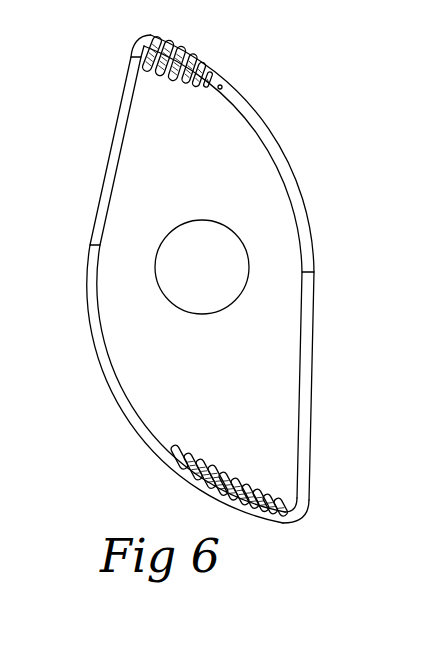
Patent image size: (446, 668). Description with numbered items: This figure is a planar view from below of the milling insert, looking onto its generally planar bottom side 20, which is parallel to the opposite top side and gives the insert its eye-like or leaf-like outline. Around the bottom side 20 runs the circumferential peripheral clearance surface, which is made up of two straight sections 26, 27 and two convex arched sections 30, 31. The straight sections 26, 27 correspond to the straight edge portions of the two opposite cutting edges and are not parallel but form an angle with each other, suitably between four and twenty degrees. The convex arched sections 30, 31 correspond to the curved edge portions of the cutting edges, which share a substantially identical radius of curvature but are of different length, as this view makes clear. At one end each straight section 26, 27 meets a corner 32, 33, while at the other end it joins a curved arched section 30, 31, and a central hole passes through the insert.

The bottom side 20 is at (207, 181).
The straight section of the clearance surface 26 is at (306, 376).
The straight section of the clearance surface 27 is at (115, 140).
The convex arched section of the clearance surface 30 is at (285, 159).
The convex arched section of the clearance surface 31 is at (102, 366).
The corner 32 is at (144, 39).
The corner 33 is at (297, 517).